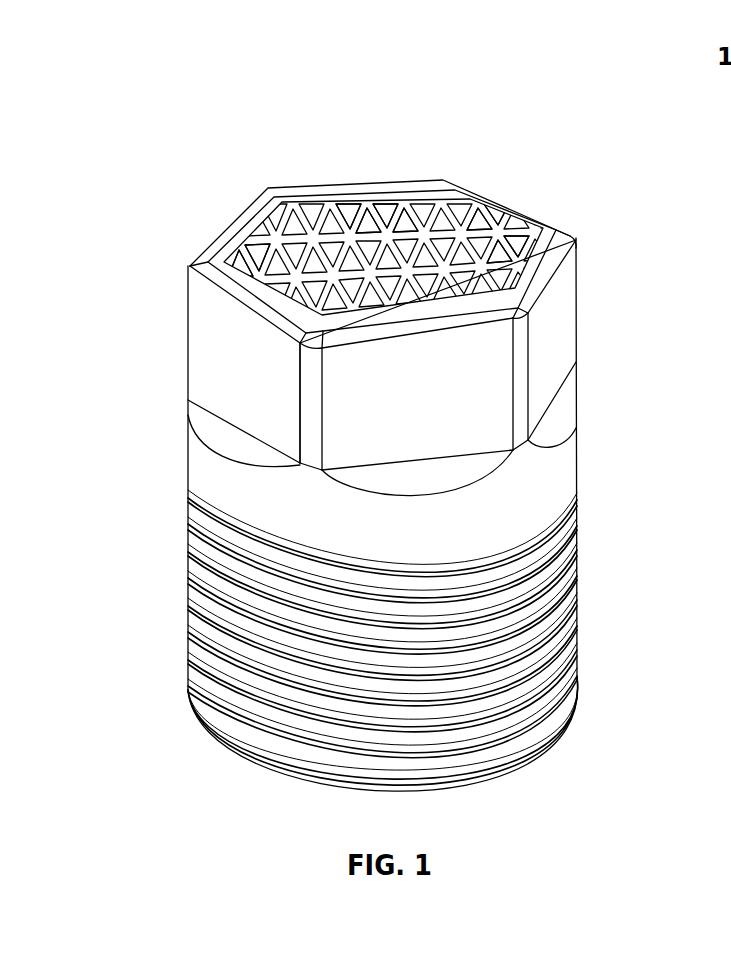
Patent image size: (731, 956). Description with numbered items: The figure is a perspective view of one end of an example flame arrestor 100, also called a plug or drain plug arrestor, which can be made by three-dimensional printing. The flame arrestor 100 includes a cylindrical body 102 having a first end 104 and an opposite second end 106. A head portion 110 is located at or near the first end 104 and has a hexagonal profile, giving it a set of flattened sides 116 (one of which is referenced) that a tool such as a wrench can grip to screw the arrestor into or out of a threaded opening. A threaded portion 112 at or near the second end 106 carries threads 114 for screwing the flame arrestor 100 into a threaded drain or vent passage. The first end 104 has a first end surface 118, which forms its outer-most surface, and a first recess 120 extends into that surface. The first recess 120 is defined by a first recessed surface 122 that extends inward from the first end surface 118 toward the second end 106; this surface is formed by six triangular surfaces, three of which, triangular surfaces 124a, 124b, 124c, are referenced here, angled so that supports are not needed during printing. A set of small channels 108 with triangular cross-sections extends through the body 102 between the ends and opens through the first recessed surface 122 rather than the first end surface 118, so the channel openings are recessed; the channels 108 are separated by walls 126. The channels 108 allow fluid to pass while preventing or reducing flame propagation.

The flame arrestor 100 is at (203, 58).
The body 102 is at (205, 392).
The first end 104 is at (280, 148).
The second end 106 is at (306, 803).
The channels 108 is at (461, 200).
The head portion 110 is at (607, 442).
The threaded portion 112 is at (607, 735).
The threads 114 is at (213, 662).
The flattened sides 116 is at (218, 358).
The first end surface 118 is at (214, 258).
The first recess 120 is at (424, 163).
The first recessed surface 122 is at (358, 200).
The triangular surface 124a is at (254, 263).
The triangular surface 124b is at (386, 202).
The triangular surface 124c is at (502, 232).
The walls 126 is at (487, 205).